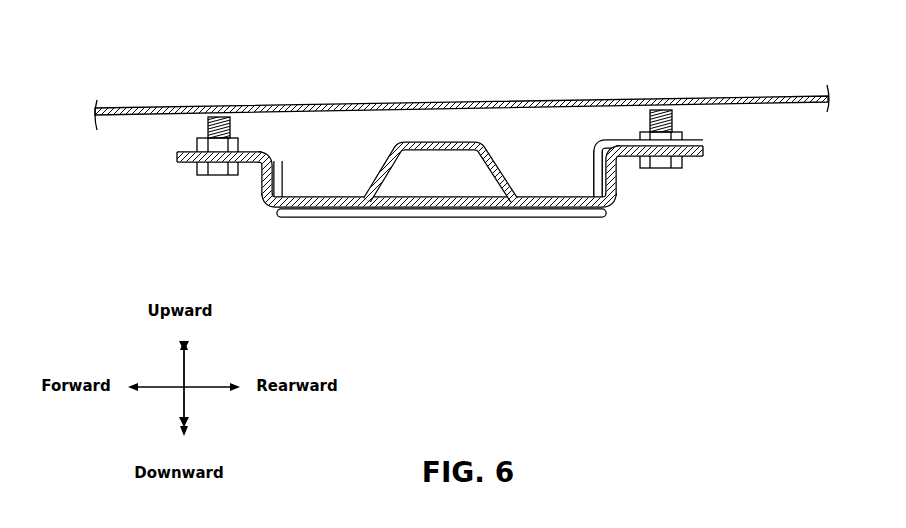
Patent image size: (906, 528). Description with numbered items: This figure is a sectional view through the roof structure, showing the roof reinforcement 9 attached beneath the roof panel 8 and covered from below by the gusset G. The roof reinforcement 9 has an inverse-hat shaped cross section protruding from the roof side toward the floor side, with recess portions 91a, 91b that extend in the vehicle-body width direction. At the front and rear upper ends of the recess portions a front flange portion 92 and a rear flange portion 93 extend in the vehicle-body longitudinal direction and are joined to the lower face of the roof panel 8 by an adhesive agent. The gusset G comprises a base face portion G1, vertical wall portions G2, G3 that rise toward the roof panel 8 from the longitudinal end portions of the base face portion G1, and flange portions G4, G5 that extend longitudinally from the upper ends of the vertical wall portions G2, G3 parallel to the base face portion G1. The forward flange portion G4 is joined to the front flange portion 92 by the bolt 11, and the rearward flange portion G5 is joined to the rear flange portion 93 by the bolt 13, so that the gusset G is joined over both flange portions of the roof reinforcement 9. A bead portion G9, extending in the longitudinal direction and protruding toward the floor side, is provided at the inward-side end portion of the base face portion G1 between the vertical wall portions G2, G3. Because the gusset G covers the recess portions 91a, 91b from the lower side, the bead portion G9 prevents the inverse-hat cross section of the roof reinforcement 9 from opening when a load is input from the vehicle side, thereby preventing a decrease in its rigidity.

The roof panel 8 is at (788, 94).
The roof reinforcement 9 is at (616, 136).
The bolt 11 is at (207, 177).
The bolt 13 is at (658, 170).
The recess portion 91a is at (331, 197).
The recess portion 91b is at (547, 197).
The front flange portion 92 is at (182, 151).
The rear flange portion 93 is at (701, 146).
The gusset G is at (437, 199).
The base face portion G1 is at (494, 208).
The vertical wall portion G2 is at (262, 180).
The vertical wall portion G3 is at (620, 188).
The flange portion G4 is at (182, 162).
The flange portion G5 is at (703, 157).
The bead portion G9 is at (412, 218).